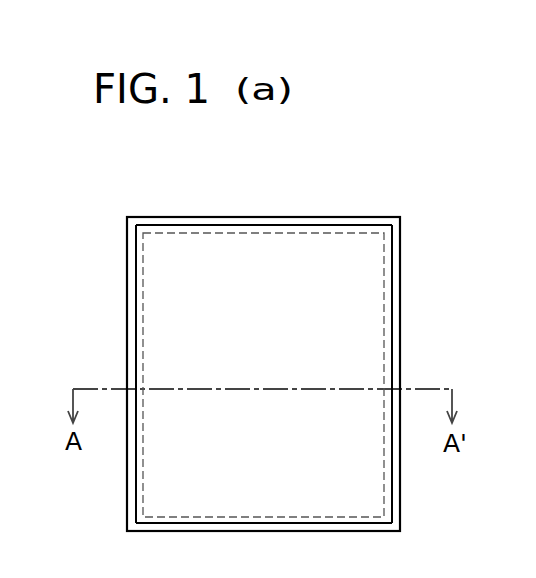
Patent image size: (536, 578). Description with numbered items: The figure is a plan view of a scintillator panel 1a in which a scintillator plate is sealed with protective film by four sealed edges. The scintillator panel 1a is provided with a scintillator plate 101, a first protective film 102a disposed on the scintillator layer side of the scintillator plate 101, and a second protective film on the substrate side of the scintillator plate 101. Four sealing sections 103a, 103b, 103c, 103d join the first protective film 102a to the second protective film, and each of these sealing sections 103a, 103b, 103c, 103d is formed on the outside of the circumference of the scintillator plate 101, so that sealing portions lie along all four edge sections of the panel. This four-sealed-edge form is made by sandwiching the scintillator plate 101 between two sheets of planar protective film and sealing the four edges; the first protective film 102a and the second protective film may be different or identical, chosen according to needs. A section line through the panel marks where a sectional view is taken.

The scintillator panel 1a is at (384, 193).
The scintillator plate 101 is at (162, 469).
The first protective film 102a is at (178, 323).
The sealing section 103a is at (157, 225).
The sealing section 103b is at (395, 323).
The sealing section 103c is at (187, 525).
The sealing section 103d is at (133, 373).